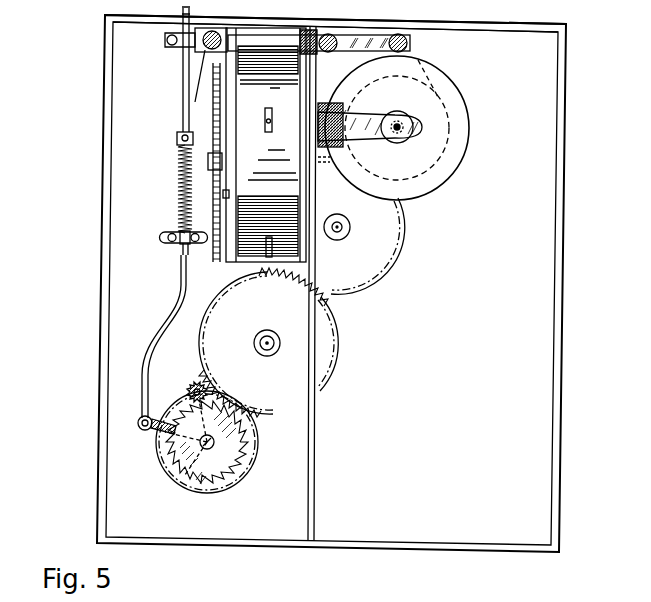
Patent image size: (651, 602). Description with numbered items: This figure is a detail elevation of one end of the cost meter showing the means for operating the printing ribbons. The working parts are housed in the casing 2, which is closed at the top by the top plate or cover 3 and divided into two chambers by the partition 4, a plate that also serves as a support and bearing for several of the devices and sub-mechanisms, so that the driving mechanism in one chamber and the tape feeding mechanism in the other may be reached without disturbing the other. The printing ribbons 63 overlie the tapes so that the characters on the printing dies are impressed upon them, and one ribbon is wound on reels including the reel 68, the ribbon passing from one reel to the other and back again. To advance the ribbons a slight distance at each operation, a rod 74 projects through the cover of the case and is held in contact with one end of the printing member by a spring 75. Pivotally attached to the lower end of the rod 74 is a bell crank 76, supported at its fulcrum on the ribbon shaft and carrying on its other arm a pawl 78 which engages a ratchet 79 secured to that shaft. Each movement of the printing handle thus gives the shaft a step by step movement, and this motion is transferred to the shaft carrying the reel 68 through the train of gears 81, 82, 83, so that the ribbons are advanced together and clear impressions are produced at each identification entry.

The casing 2 is at (552, 377).
The top plate or cover 3 is at (517, 28).
The partition 4 is at (313, 428).
The printing ribbons 63 is at (200, 68).
The reel 68 is at (453, 158).
The rod 74 is at (181, 108).
The spring 75 is at (179, 188).
The bell crank 76 is at (151, 408).
The pawl 78 is at (198, 382).
The ratchet 79 is at (198, 476).
The gear 81 is at (250, 424).
The gear 82 is at (318, 313).
The gear 83 is at (320, 290).